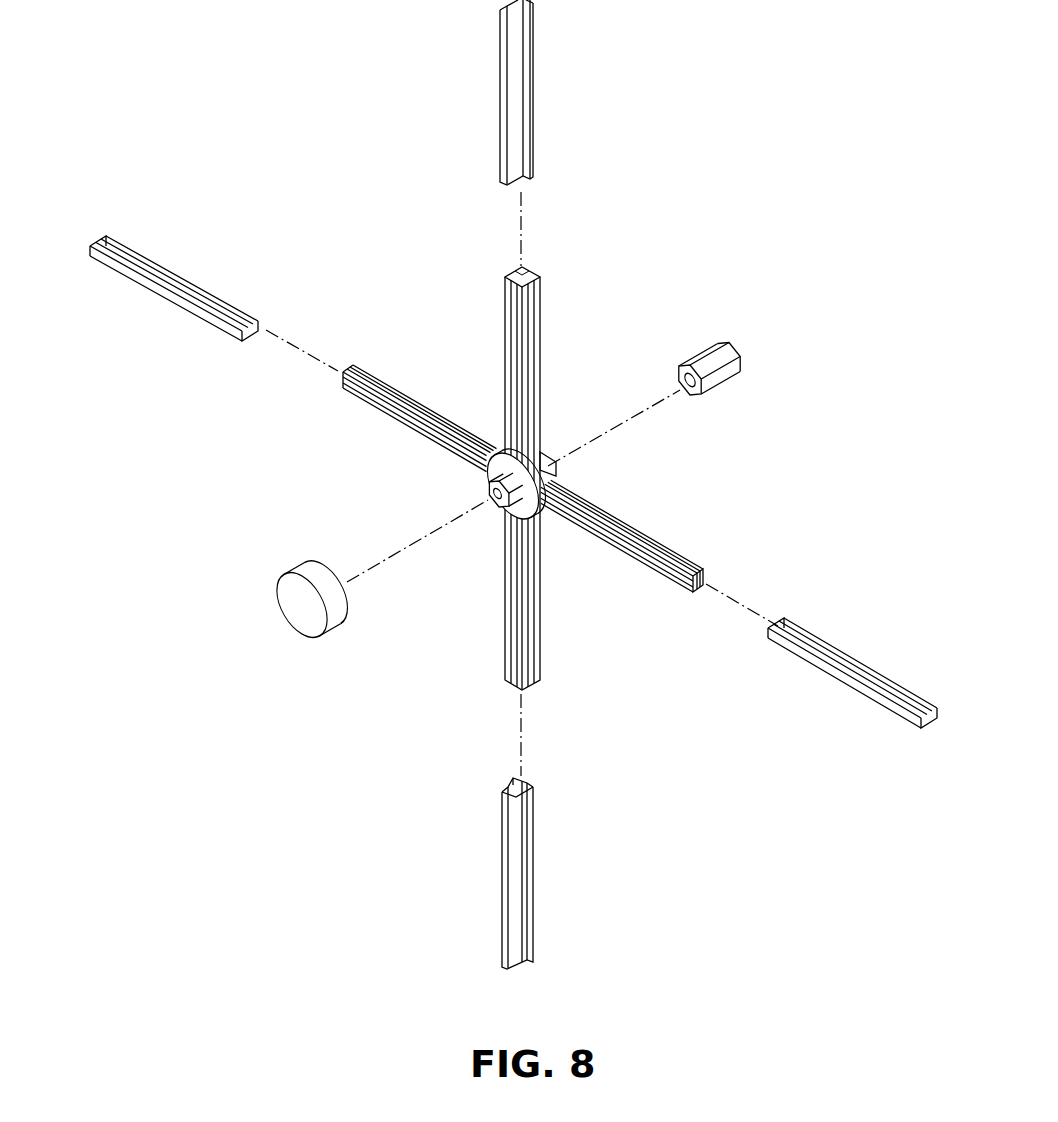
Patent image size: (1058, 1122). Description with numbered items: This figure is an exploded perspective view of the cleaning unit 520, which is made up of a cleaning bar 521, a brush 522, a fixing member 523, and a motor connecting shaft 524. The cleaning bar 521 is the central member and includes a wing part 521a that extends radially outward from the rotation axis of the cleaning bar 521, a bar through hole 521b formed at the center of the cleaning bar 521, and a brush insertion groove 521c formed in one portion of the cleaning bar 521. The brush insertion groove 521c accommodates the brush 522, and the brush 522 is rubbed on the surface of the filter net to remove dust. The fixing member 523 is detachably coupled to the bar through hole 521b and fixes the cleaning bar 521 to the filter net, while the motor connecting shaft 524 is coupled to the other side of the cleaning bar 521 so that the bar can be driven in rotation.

The cleaning unit 520 is at (305, 49).
The cleaning bar 521 is at (470, 290).
The wing part 521a is at (517, 347).
The bar through hole 521b is at (487, 493).
The brush insertion groove 521c is at (708, 578).
The brush 522 is at (535, 67).
The fixing member 523 is at (295, 605).
The motor connecting shaft 524 is at (732, 352).